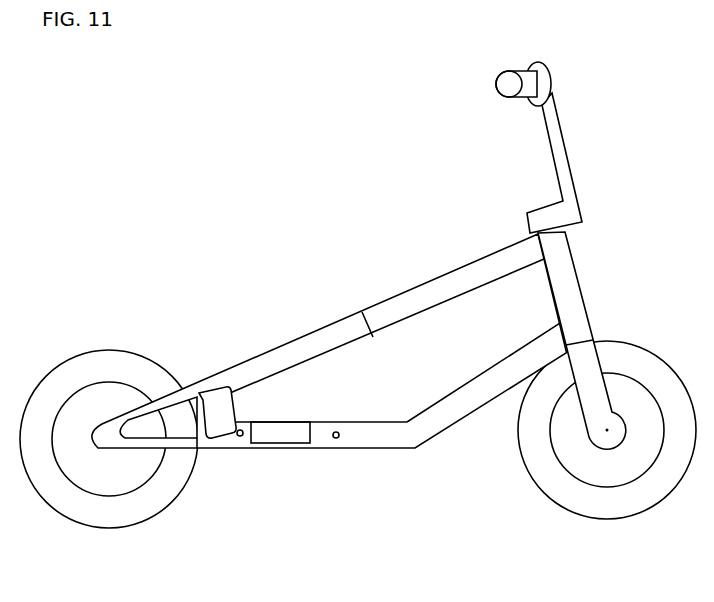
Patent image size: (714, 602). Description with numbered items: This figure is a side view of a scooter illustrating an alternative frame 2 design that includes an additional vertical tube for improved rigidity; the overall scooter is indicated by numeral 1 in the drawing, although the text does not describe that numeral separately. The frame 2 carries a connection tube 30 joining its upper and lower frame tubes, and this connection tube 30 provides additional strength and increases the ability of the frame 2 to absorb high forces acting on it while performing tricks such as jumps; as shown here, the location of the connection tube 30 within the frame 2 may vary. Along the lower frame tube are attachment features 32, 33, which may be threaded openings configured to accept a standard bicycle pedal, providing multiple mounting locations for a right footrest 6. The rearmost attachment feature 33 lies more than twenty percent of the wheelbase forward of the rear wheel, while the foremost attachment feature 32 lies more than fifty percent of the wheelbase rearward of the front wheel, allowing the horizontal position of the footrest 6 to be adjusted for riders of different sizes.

The scooter 1 is at (278, 208).
The frame 2 is at (424, 286).
The connection tube 30 is at (211, 387).
The attachment feature 32 is at (338, 440).
The attachment feature 33 is at (238, 437).
The right footrest 6 is at (268, 443).